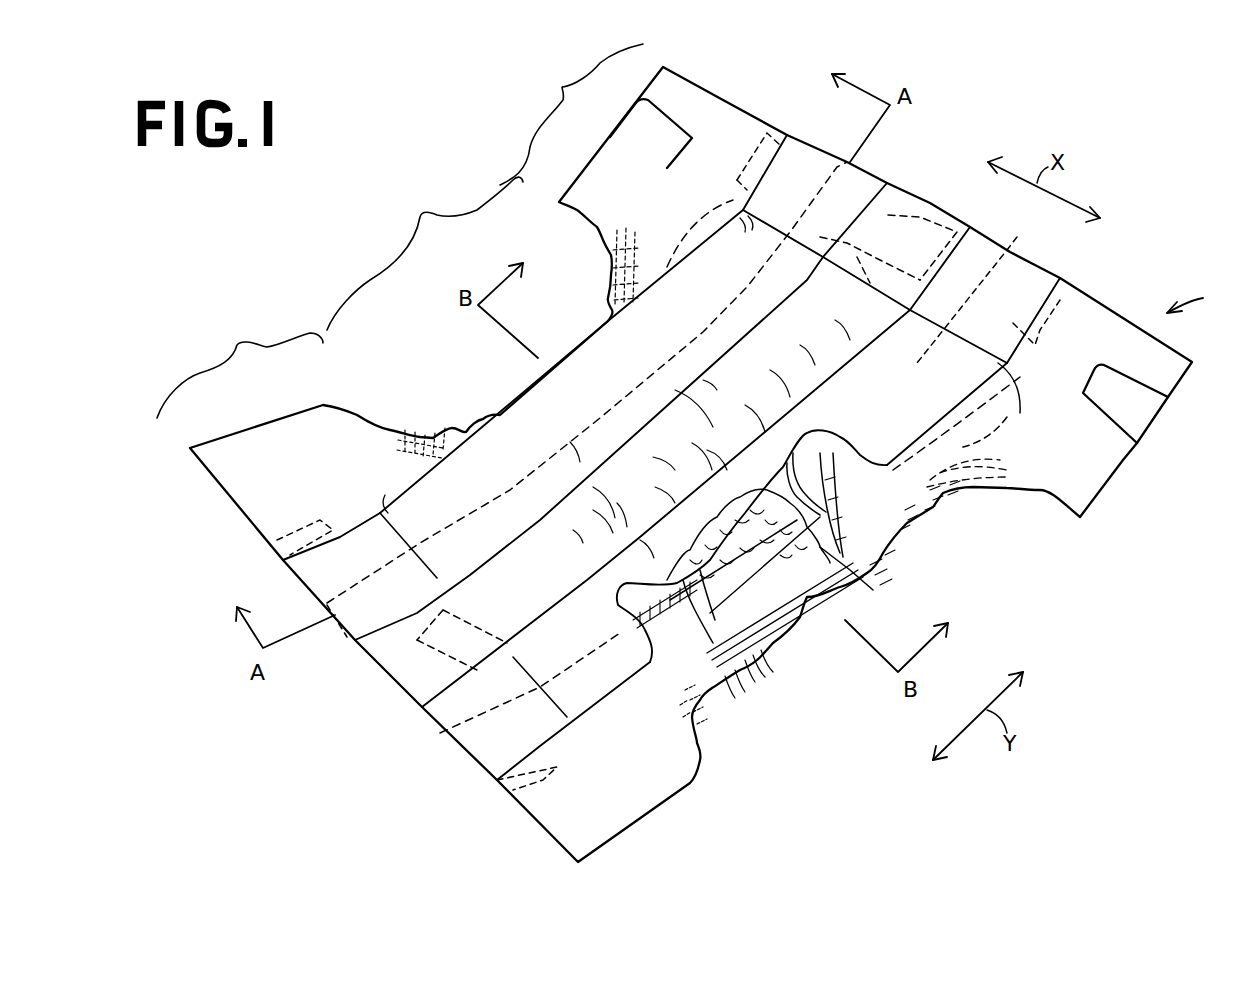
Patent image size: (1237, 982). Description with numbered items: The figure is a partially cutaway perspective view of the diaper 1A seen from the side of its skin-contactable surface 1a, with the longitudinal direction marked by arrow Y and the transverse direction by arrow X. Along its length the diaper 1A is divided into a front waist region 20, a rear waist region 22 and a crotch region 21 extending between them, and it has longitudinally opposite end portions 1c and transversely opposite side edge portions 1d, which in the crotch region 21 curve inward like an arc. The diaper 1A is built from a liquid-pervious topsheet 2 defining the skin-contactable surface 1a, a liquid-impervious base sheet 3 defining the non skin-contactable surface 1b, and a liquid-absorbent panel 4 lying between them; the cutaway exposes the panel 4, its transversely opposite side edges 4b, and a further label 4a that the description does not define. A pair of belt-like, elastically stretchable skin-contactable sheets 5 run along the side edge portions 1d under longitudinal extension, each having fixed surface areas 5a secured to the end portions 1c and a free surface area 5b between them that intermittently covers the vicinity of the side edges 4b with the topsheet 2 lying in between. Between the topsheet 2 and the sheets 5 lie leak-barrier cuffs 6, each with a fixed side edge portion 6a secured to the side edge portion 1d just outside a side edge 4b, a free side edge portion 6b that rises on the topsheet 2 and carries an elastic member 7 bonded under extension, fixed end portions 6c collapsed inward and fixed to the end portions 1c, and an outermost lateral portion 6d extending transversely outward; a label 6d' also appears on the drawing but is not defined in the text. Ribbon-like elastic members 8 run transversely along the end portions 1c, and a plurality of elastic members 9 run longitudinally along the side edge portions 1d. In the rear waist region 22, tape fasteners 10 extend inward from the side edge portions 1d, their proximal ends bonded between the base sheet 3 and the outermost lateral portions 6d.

The diaper 1A is at (713, 464).
The skin-contactable surface 1a is at (650, 453).
The non skin-contactable surface 1b is at (697, 777).
The longitudinally opposite end portions 1c is at (257, 503).
The transversely opposite side edge portions 1d is at (607, 297).
The liquid-pervious topsheet 2 is at (527, 527).
The liquid-impervious base sheet 3 is at (780, 643).
The liquid-absorbent panel 4 is at (763, 560).
The end portion of core 4a is at (677, 442).
The transversely opposite side edges of the panel 4b is at (820, 575).
The skin-contactable sheets 5 is at (580, 347).
The fixed surface areas 5a is at (797, 170).
The free surface areas 5b is at (740, 318).
The leak-barrier cuffs 6 is at (510, 397).
The fixed side edge portions 6a is at (907, 527).
The free side edge portions 6b is at (620, 596).
The fixed longitudinally opposite end portions 6c is at (773, 143).
The outermost lateral portions 6d is at (822, 496).
The elastic end portion 6d' is at (344, 394).
The elastic members 7 is at (806, 482).
The ribbon-like elastic members 8 is at (888, 215).
The elastic members 9 is at (413, 417).
The tape fasteners 10 is at (633, 120).
The front waist region 20 is at (240, 364).
The crotch region 21 is at (425, 253).
The rear waist region 22 is at (571, 114).